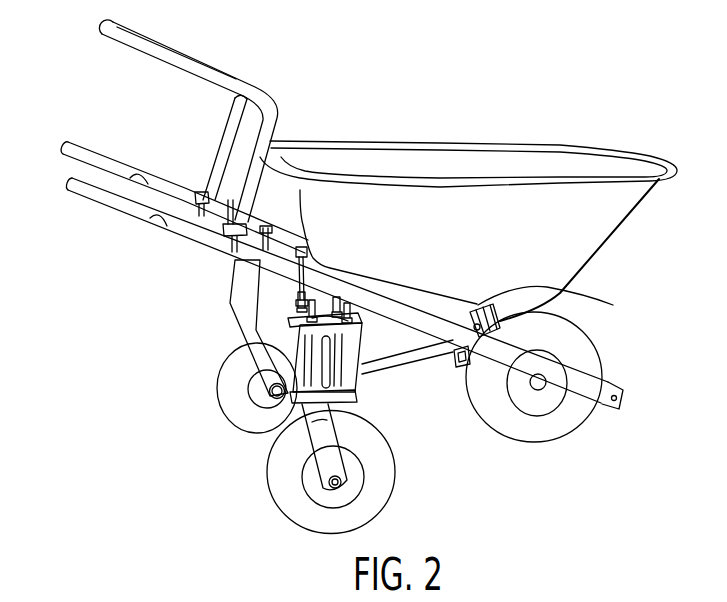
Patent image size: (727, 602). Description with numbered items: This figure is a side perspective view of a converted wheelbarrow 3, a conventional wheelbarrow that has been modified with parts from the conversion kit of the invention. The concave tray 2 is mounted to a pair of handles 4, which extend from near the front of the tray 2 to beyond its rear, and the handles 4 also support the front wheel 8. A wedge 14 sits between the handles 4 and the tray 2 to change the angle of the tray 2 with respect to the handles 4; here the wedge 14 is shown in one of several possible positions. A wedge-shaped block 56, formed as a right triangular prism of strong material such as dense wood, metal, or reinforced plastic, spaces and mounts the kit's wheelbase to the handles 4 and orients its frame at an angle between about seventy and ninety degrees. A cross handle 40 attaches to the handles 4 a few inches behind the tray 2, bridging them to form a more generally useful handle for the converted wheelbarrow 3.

The converted wheelbarrow 3 is at (633, 98).
The cross handle 40 is at (157, 48).
The concave tray 2 is at (604, 228).
The wedge 14 is at (613, 305).
The handles 4 is at (185, 230).
The wedge-shaped block 56 is at (296, 264).
The front wheel 8 is at (550, 427).